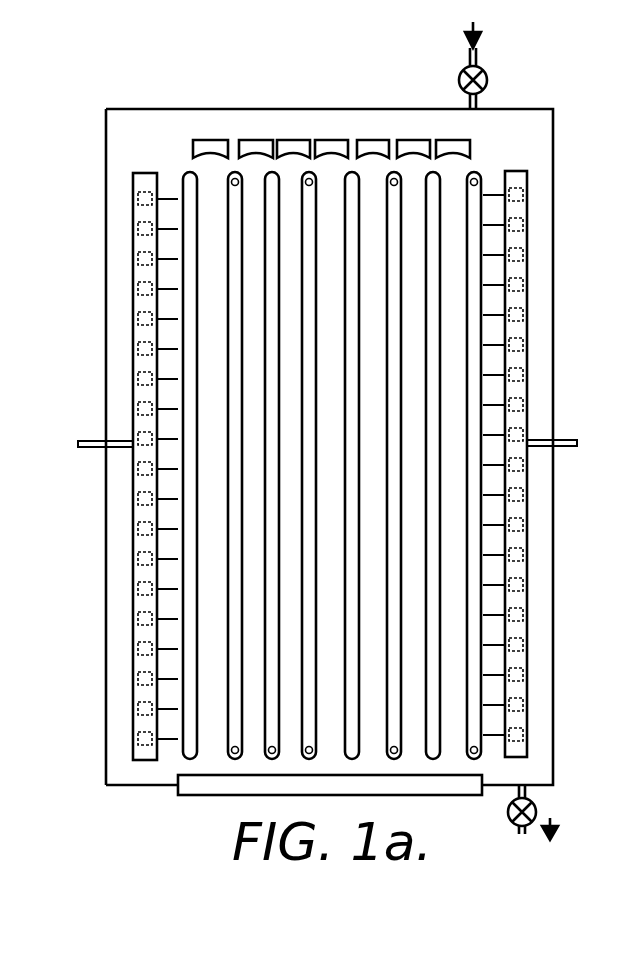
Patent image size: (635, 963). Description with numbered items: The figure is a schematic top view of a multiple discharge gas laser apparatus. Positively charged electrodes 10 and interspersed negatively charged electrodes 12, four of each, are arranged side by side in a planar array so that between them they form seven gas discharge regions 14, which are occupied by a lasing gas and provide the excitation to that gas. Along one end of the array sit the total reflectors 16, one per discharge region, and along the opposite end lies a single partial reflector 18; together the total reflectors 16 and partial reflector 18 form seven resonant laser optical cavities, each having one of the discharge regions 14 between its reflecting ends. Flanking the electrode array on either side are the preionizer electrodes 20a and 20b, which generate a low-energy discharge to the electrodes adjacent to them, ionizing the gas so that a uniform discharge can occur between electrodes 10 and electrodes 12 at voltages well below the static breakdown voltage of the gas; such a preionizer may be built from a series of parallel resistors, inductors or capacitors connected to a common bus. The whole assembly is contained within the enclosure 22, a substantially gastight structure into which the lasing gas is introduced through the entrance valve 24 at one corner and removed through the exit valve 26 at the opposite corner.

The positively charged electrodes 10 is at (300, 771).
The negatively charged electrodes 12 is at (270, 652).
The gas discharge regions 14 is at (332, 259).
The total reflectors 16 is at (322, 140).
The partial reflector 18 is at (178, 792).
The preionizer electrode 20a is at (133, 522).
The preionizer electrode 20b is at (527, 332).
The enclosure 22 is at (553, 405).
The entrance valve 24 is at (488, 80).
The exit valve 26 is at (540, 812).